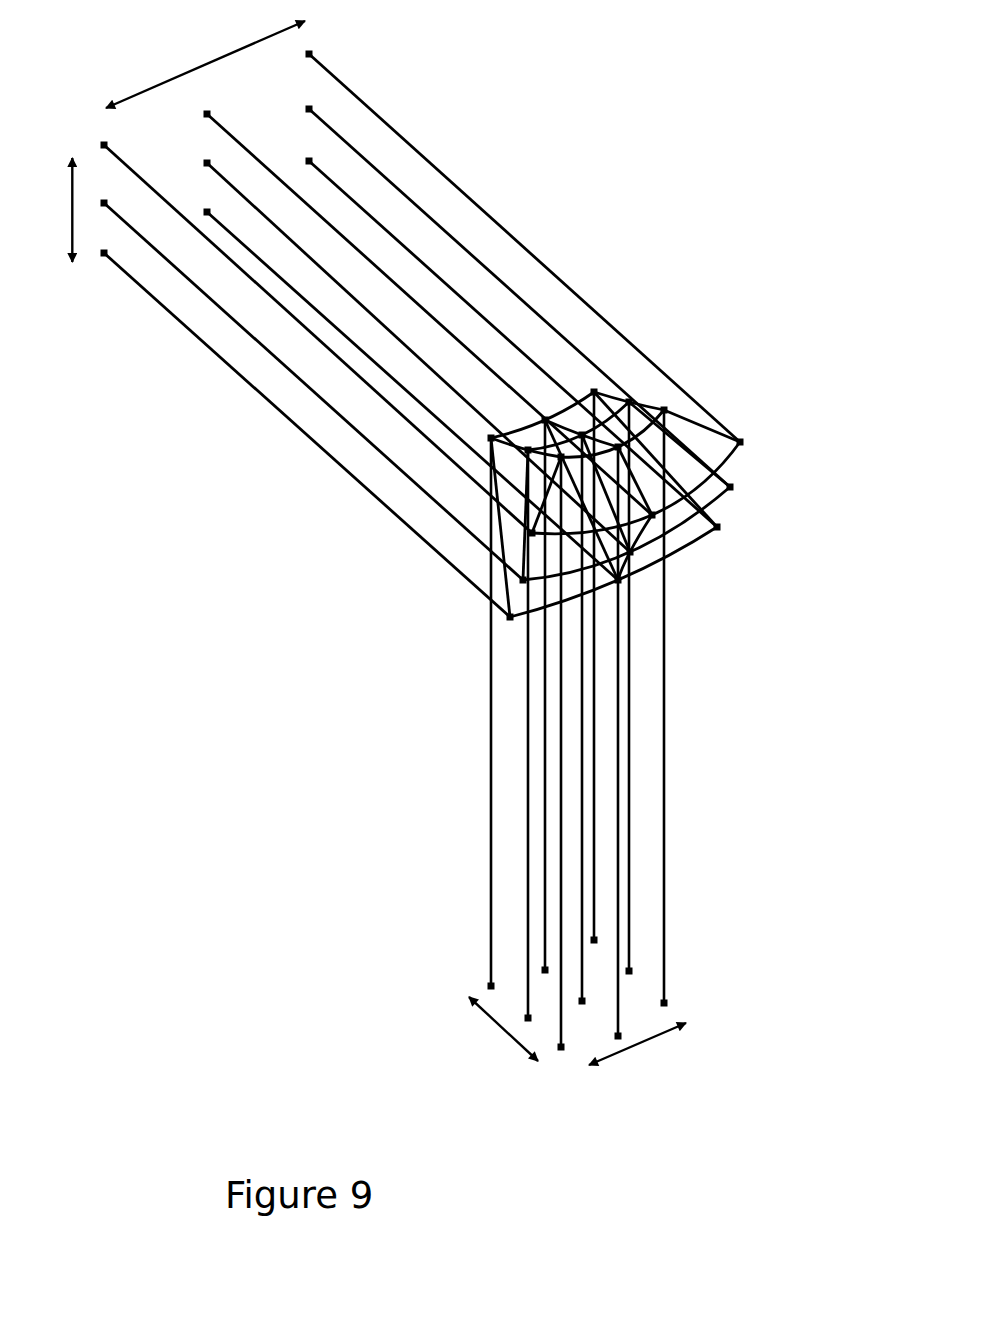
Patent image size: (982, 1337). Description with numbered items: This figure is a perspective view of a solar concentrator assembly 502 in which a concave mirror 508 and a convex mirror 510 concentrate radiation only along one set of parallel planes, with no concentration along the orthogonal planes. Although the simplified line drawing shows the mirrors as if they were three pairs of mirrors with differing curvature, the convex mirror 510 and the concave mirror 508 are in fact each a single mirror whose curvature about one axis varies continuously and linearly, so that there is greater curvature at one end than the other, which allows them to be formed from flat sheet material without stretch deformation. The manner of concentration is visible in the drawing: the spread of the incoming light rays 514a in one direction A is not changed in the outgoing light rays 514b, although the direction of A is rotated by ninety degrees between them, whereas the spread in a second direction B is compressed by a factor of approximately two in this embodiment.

The solar concentrator assembly 502 is at (603, 266).
The concave mirror 508 is at (721, 547).
The convex mirror 510 is at (655, 399).
The incoming light rays 514a is at (180, 212).
The outgoing light rays 514b is at (628, 904).